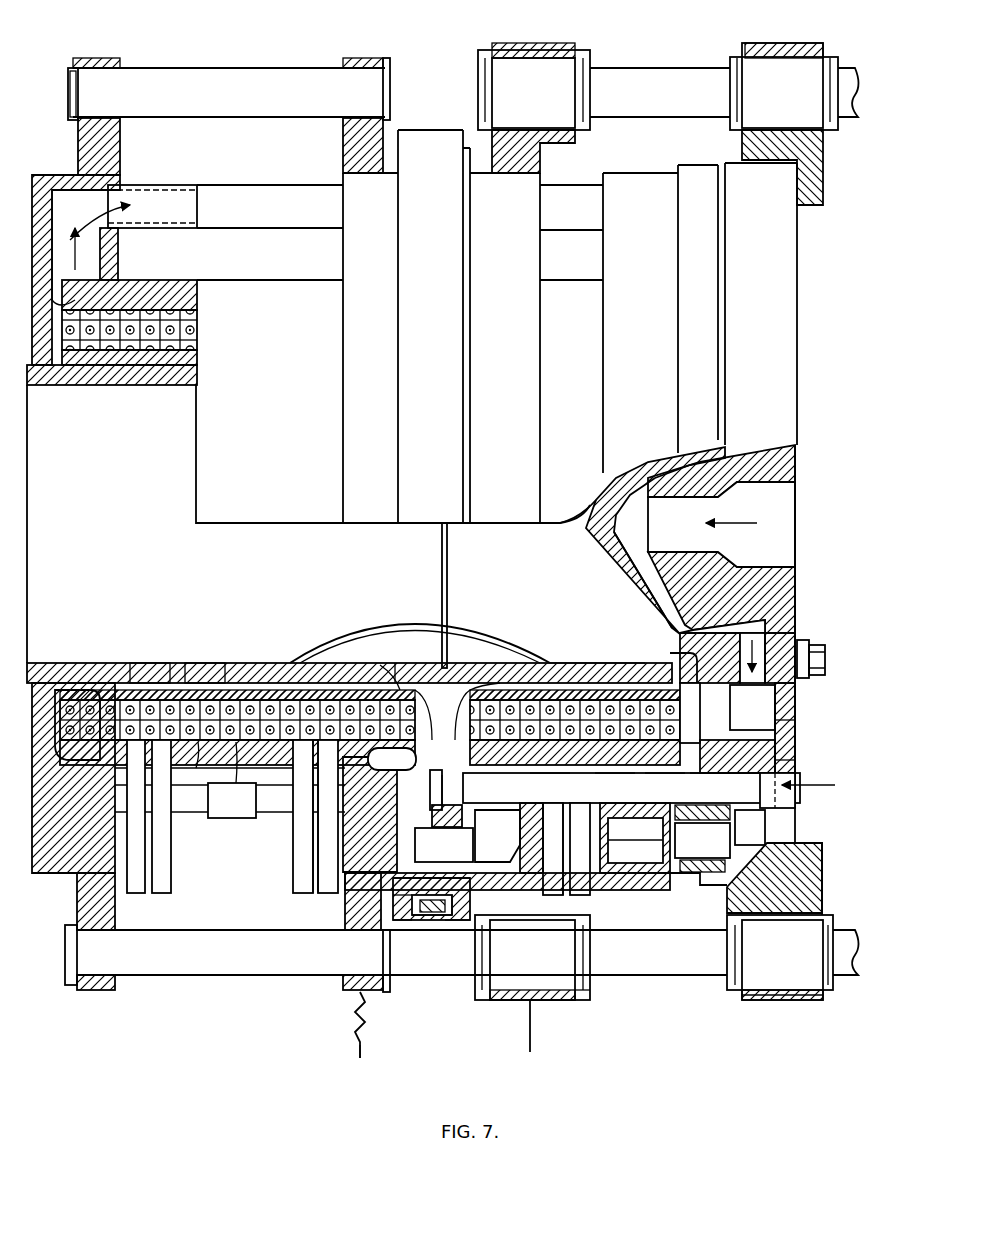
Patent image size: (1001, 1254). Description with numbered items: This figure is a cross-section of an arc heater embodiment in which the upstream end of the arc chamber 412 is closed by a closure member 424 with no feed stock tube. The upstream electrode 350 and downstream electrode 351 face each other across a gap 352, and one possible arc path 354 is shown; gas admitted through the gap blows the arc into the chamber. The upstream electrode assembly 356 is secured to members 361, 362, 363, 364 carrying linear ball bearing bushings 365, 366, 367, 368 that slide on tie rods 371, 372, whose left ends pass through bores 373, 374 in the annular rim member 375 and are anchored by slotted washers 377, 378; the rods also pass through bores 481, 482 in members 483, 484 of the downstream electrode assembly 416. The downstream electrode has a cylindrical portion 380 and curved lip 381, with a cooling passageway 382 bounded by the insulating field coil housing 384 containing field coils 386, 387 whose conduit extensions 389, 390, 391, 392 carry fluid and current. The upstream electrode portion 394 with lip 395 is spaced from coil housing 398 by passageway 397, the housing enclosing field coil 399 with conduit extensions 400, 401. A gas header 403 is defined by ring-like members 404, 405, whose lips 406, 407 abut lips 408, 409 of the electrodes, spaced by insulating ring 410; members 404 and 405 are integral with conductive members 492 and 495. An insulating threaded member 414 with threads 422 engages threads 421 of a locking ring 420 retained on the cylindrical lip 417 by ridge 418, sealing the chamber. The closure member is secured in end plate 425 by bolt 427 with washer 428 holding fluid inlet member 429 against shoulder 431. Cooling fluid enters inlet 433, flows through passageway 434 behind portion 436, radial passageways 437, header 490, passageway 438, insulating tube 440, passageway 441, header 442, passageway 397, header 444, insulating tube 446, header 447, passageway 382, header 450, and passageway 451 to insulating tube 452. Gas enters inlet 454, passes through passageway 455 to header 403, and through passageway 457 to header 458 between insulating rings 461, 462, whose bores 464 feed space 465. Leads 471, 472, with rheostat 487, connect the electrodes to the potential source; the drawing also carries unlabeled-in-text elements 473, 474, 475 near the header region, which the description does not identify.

The bore 373 is at (118, 68).
The slotted washer 377 is at (72, 68).
The bore 481 is at (360, 60).
The annular rim member 375 is at (120, 140).
The additional member 483 is at (343, 150).
The linear ball bearing bushing 365 is at (585, 56).
The member 361 is at (545, 156).
The tie rod 371 is at (655, 117).
The linear ball bearing bushing 366 is at (735, 62).
The member 362 is at (742, 140).
The arc chamber 412 is at (308, 514).
The passageway 451 is at (65, 185).
The tube of insulating material 452 is at (158, 228).
The fluid header 450 is at (110, 270).
The arc 354 is at (392, 618).
The lip portion 409 is at (458, 642).
The downstream electrode 351 is at (276, 663).
The cylindrical portion 380 is at (106, 663).
The field coil housing 384 is at (150, 663).
The fluid passageway 382 is at (204, 663).
The curved radially extending lip 381 is at (396, 663).
The lip portion 408 is at (383, 670).
The gap 352 is at (430, 690).
The curved radially extending lip 395 is at (458, 690).
The coil housing 398 is at (490, 682).
The cylindrical metallic electrode portion 394 is at (584, 663).
The passageway 397 is at (630, 663).
The magnetic field coil 399 is at (562, 663).
The upstream electrode 350 is at (610, 663).
The fluid header 447 is at (255, 760).
The field coil 387 is at (232, 780).
The field coil 386 is at (196, 768).
The conduit extension 389 is at (137, 893).
The conduit extension 390 is at (162, 893).
The conduit extension 391 is at (300, 893).
The conduit extension 392 is at (328, 893).
The electrically conductive member 492 is at (336, 836).
The downstream electrode assembly 416 is at (317, 868).
The bore 374 is at (110, 985).
The slotted washer 378 is at (70, 985).
The member 484 is at (353, 913).
The bore 482 is at (352, 975).
The rheostat 487 is at (357, 1020).
The lead 471 is at (365, 1045).
The cylindrical lip portion 417 is at (410, 830).
The lip portion 406 is at (392, 758).
The ring-like member 404 is at (428, 782).
The gas header 403 is at (440, 795).
The annular ring 410 is at (430, 820).
The tube of insulating material 446 is at (444, 845).
The ring-like member 405 is at (497, 836).
The lip portion 407 is at (631, 788).
The fluid header 444 is at (550, 786).
The fluid header 442 is at (615, 786).
The bar portion 475 is at (665, 786).
The bar portion 474 is at (710, 784).
The conduit extension 400 is at (556, 895).
The conduit extension 401 is at (585, 895).
The lead 473 is at (575, 880).
The annular ring member 462 is at (635, 837).
The passageway 455 is at (635, 847).
The tube of insulating material 440 is at (702, 840).
The passageway 457 is at (748, 827).
The upstream electrode assembly 356 is at (660, 878).
The passageway 441 is at (668, 880).
The threads 422 is at (472, 879).
The threads 421 is at (470, 895).
The electrically conductive member 495 is at (480, 912).
The outwardly flaring ridge 418 is at (406, 920).
The threaded locking ring 420 is at (442, 915).
The annular threaded member 414 is at (430, 920).
The member 363 is at (520, 1000).
The linear ball bearing bushing 367 is at (585, 991).
The lead 472 is at (545, 1040).
The tie rod 372 is at (692, 975).
The member 364 is at (765, 1000).
The linear ball bearing bushing 368 is at (748, 992).
The closure member 424 is at (622, 470).
The portion of closure member 436 is at (590, 508).
The passageway 434 is at (600, 545).
The fluid inlet member 429 is at (790, 580).
The fluid inlet 433 is at (797, 500).
The radially extending passageways 437 is at (748, 624).
The washer 428 is at (808, 640).
The bolt 427 is at (827, 660).
The bores 464 is at (710, 658).
The shoulder 431 is at (797, 682).
The space 465 is at (682, 660).
The annular ring member 461 is at (752, 707).
The circumferentially extending header 490 is at (795, 708).
The additional gas header 458 is at (790, 725).
The end plate 425 is at (832, 722).
The radially extending passageway 438 is at (796, 763).
The gas inlet 454 is at (797, 795).